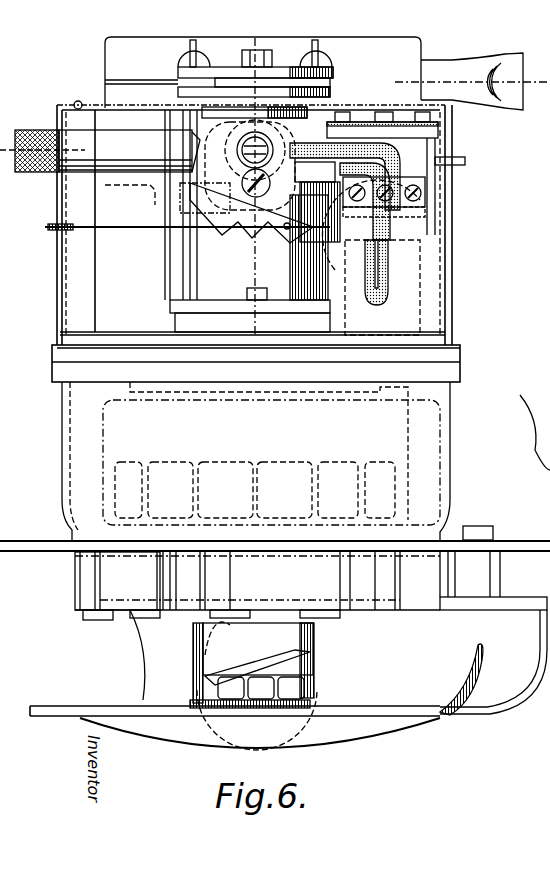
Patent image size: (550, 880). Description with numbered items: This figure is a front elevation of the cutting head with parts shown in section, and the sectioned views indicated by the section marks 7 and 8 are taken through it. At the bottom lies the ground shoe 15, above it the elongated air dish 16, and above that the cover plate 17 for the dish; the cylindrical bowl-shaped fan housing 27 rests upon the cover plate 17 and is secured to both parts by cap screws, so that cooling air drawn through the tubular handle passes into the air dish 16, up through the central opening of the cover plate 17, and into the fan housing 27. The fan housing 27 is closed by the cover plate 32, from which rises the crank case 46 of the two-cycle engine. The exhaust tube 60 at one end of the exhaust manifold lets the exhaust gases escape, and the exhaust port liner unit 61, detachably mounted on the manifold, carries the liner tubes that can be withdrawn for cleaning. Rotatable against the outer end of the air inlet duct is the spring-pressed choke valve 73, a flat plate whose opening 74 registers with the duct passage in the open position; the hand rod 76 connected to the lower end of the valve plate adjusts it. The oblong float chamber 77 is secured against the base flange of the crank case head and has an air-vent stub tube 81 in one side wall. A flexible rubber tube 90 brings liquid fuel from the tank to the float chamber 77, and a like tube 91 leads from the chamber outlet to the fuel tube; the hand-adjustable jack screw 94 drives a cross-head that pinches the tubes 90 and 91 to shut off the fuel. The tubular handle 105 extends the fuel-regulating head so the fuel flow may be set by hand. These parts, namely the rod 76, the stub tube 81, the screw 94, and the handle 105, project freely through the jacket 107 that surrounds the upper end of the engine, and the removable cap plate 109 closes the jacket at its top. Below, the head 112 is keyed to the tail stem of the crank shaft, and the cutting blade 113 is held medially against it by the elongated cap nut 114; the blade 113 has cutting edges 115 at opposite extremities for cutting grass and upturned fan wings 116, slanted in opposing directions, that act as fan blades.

The section line 7 is at (543, 94).
The section line 8 is at (265, 40).
The ground shoe 15 is at (38, 708).
The air dish 16 is at (75, 580).
The cover plate 17 is at (522, 541).
The fan housing 27 is at (448, 456).
The cover plate 32 is at (462, 348).
The crank case 46 is at (200, 275).
The exhaust tube 60 is at (515, 104).
The exhaust port liner unit 61 is at (334, 73).
The choke valve 73 is at (232, 190).
The opening 74 is at (245, 148).
The hand rod 76 is at (48, 228).
The float chamber 77 is at (430, 208).
The air-vent stub tube 81 is at (463, 165).
The flexible tube 90 is at (395, 262).
The flexible tube 91 is at (378, 285).
The jack screw 94 is at (410, 225).
The tubular handle 105 is at (35, 135).
The jacket 107 is at (58, 303).
The cap plate 109 is at (103, 106).
The head 112 is at (312, 643).
The cutting blade 113 is at (254, 680).
The cap nut 114 is at (218, 690).
The cutting edges 115 is at (197, 668).
The fan wings 116 is at (312, 661).